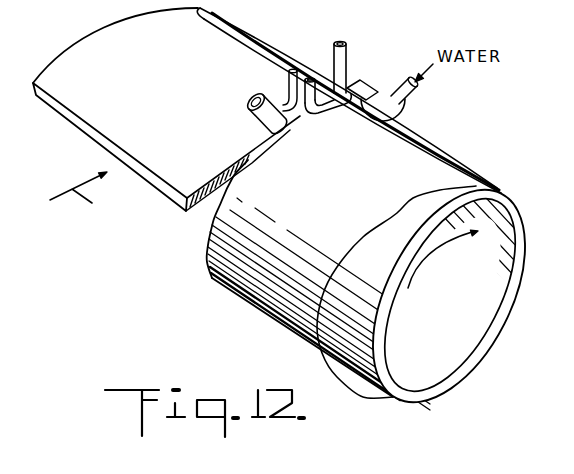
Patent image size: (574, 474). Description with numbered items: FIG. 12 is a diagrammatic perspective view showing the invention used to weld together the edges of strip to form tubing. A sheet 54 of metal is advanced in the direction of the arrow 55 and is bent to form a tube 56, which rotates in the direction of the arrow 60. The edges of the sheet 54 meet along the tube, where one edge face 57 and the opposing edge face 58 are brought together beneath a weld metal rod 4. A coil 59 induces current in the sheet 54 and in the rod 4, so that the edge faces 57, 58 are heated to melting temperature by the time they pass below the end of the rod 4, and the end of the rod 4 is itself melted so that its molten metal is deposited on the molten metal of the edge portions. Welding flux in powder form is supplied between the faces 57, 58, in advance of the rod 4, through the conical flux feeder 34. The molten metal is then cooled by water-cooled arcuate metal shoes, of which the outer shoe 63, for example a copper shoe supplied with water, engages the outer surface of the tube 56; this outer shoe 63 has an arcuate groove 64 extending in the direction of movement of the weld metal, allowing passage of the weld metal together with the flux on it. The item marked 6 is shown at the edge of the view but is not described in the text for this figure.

The weld metal rod 4 is at (336, 44).
The housing 6 is at (443, 0).
The flux feeder 34 is at (257, 113).
The sheet 54 is at (183, 117).
The arrow 55 is at (88, 192).
The tube 56 is at (489, 169).
The edge face 57 is at (194, 208).
The edge face 58 is at (198, 242).
The coil 59 is at (338, 116).
The arrow 60 is at (425, 267).
The outer shoe 63 is at (403, 115).
The arcuate groove 64 is at (378, 104).